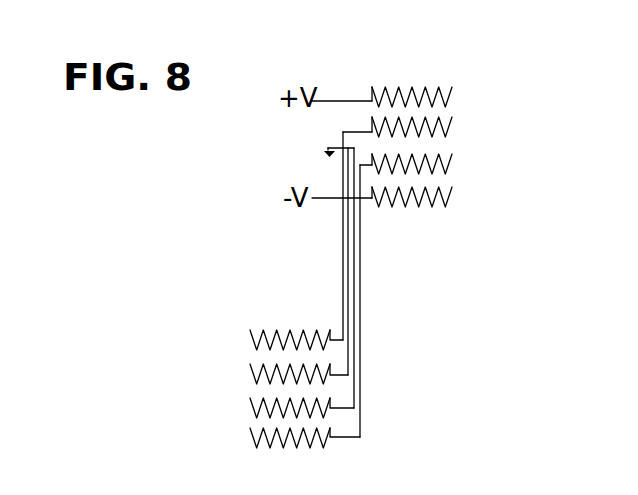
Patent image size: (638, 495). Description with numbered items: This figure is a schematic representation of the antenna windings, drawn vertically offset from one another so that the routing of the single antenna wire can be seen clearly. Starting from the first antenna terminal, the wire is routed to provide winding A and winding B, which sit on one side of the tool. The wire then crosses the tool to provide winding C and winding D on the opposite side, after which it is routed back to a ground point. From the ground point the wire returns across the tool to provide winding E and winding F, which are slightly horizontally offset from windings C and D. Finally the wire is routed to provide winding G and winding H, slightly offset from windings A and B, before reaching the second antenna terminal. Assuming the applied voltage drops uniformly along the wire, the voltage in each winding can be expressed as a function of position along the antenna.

The winding A is at (404, 98).
The winding B is at (419, 129).
The winding C is at (277, 339).
The winding D is at (280, 371).
The winding E is at (283, 404).
The winding F is at (286, 438).
The winding G is at (429, 164).
The winding H is at (405, 198).